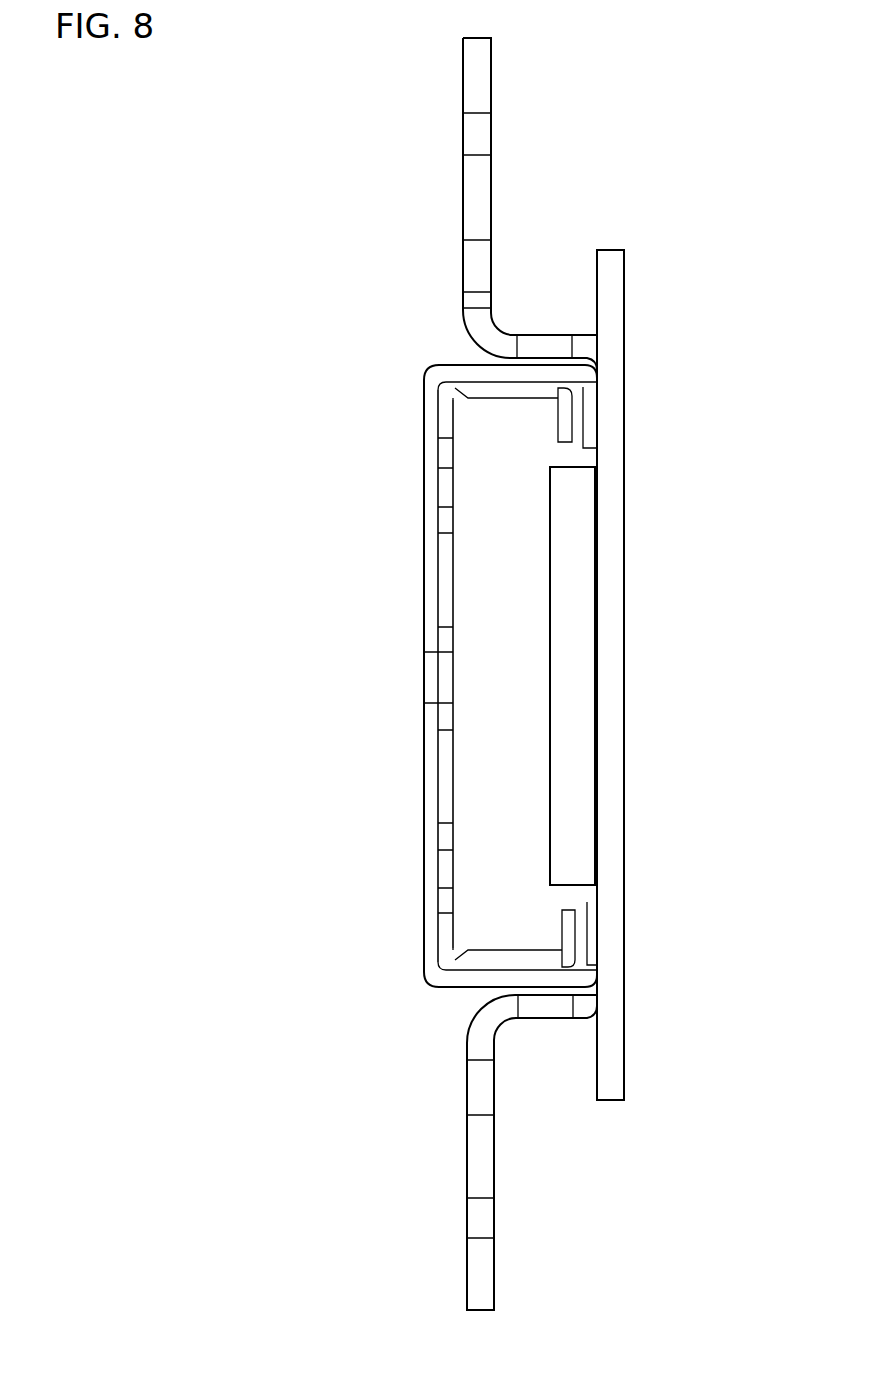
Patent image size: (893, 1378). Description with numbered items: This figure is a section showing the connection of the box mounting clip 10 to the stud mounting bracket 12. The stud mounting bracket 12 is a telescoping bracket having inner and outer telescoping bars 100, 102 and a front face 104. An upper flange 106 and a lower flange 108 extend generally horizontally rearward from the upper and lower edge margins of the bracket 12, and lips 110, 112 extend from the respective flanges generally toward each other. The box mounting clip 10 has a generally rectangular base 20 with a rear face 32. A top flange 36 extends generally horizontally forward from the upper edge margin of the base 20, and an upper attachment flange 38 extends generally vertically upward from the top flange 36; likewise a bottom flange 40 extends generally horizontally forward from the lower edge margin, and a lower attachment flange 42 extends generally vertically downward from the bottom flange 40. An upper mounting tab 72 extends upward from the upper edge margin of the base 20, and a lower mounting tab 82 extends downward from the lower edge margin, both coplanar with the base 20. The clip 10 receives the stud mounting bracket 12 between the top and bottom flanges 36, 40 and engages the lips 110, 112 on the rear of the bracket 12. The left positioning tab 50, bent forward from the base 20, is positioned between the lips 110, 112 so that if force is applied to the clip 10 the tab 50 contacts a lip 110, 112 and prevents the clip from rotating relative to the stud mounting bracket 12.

The box mounting clip 10 is at (502, 665).
The stud mounting bracket 12 is at (453, 700).
The base 20 is at (660, 675).
The rear face 32 is at (624, 718).
The top flange 36 is at (541, 335).
The upper attachment flange 38 is at (490, 180).
The bottom flange 40 is at (541, 1018).
The lower attachment flange 42 is at (467, 1150).
The left positioning tab 50 is at (566, 562).
The upper mounting tab 72 is at (624, 300).
The lower mounting tab 82 is at (624, 1062).
The inner telescoping bar 100 is at (447, 782).
The outer telescoping bar 102 is at (432, 765).
The front face 104 is at (424, 560).
The upper flange 106 is at (486, 378).
The lower flange 108 is at (488, 978).
The lip 110 is at (592, 418).
The lip 112 is at (564, 915).